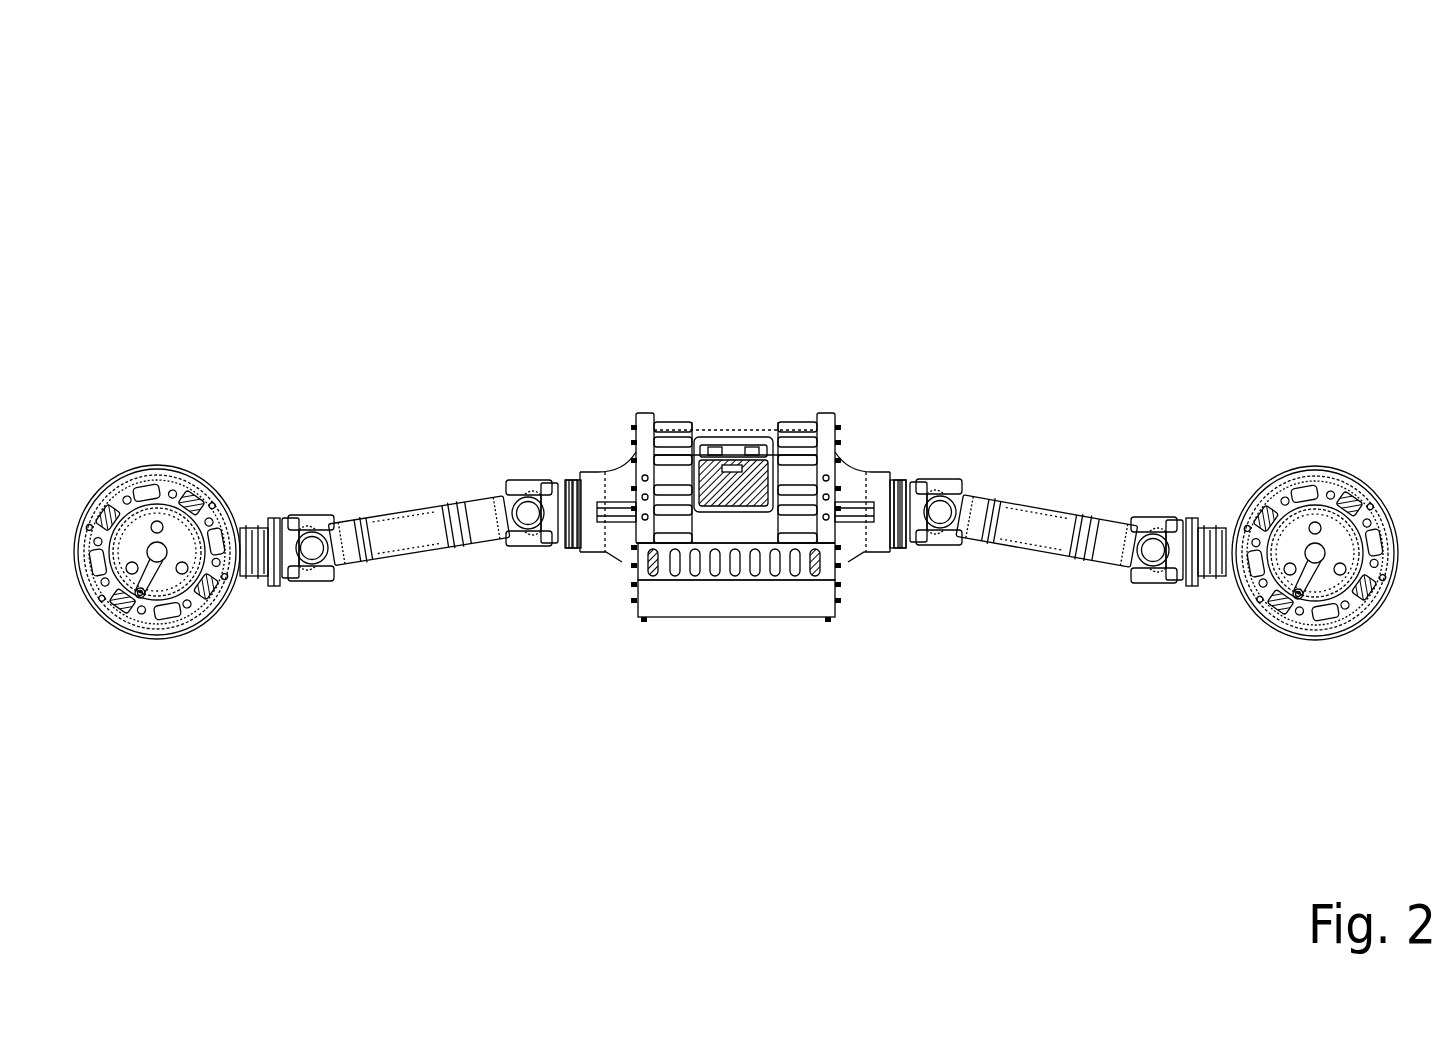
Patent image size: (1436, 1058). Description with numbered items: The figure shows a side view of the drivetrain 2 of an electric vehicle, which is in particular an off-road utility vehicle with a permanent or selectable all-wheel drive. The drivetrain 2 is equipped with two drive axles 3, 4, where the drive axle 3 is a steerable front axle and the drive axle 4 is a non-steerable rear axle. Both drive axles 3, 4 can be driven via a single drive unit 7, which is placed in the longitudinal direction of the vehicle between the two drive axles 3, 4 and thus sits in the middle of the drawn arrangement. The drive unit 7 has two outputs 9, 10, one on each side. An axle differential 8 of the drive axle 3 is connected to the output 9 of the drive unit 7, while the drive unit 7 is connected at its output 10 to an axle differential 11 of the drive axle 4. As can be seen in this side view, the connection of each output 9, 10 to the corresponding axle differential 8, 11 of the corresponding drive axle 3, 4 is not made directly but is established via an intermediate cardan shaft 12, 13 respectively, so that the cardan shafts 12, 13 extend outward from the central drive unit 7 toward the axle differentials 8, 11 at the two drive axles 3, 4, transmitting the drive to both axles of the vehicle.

The drivetrain 2 is at (331, 198).
The drive axle 3 is at (1310, 443).
The drive axle 4 is at (152, 425).
The drive unit 7 is at (730, 450).
The axle differential 8 is at (1222, 530).
The output 9 is at (892, 443).
The output 10 is at (566, 575).
The axle differential 11 is at (247, 566).
The cardan shaft 12 is at (1030, 530).
The cardan shaft 13 is at (402, 543).